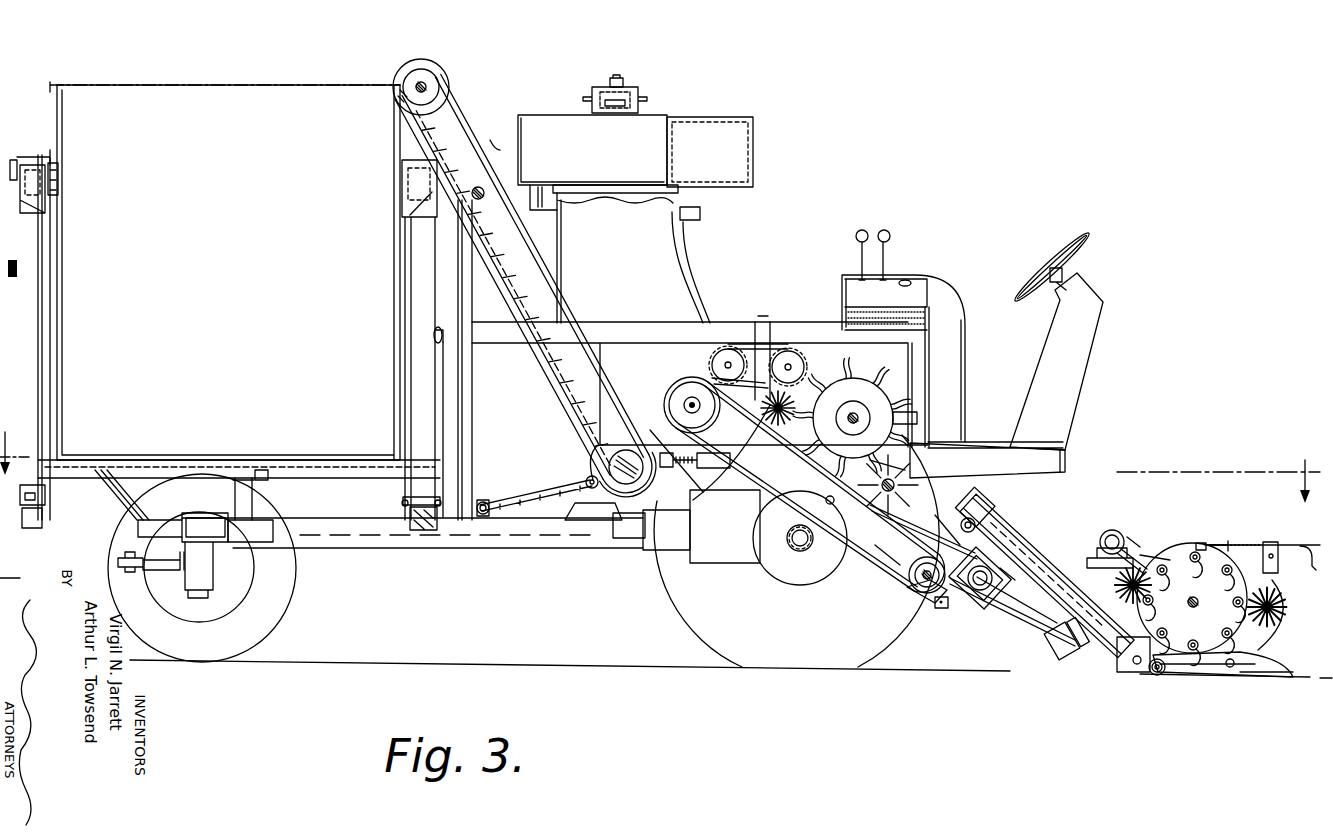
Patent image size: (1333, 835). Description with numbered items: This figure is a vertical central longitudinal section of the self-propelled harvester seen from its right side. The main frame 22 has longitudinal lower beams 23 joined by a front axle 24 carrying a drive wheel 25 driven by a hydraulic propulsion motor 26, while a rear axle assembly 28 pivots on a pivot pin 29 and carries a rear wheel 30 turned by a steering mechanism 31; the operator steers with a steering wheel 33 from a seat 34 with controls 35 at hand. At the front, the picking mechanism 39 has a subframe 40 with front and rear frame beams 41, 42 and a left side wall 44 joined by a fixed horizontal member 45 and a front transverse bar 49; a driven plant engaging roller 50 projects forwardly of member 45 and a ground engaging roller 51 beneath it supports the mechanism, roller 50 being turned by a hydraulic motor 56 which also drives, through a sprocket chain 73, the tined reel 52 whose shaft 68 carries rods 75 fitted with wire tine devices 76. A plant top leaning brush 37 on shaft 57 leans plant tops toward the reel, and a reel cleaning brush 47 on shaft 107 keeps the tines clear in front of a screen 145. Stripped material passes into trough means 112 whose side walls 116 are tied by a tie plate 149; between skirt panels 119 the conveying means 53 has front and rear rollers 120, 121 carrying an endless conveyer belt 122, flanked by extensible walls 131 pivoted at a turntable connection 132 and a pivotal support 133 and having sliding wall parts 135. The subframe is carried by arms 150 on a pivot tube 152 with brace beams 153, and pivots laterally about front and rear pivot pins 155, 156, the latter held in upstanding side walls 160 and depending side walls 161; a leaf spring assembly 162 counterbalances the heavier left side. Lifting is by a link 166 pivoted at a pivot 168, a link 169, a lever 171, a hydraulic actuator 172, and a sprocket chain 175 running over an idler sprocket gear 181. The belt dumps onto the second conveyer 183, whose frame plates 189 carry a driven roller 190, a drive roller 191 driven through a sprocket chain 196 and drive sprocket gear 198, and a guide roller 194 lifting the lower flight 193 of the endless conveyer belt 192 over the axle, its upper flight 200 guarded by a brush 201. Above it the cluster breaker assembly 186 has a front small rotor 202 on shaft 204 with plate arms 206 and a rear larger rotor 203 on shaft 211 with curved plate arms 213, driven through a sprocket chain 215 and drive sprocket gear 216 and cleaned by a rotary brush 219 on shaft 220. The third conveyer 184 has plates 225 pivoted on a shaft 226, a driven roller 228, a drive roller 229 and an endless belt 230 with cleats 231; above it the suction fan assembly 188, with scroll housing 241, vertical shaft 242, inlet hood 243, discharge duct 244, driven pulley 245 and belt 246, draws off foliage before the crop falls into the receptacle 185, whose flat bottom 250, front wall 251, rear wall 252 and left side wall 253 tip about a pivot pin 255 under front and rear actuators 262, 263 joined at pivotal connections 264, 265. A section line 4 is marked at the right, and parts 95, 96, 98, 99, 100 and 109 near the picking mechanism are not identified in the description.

The section line 4- 4 is at (660, 459).
The main frame 22 is at (516, 556).
The longitudinal lower beams 23 is at (562, 553).
The front axle 24 is at (798, 555).
The drive wheel 25 is at (706, 638).
The hydraulic propulsion motor 26 is at (650, 552).
The rear axle assembly 28 is at (222, 575).
The pivot pin 29 is at (175, 518).
The rear wheel 30 is at (252, 630).
The steering mechanism 31 is at (165, 572).
The steering wheel 33 is at (1087, 236).
The seat 34 is at (932, 292).
The controls 35 is at (878, 228).
The plant top leaning means 37 is at (1270, 630).
The picking mechanism 39 is at (1228, 540).
The subframe 40 is at (1015, 630).
The front frame beam 41 is at (1090, 652).
The rear frame beam 42 is at (985, 600).
The left front side wall 44 is at (1258, 650).
The fixed horizontal member 45 is at (1125, 655).
The reel cleaning means 47 is at (1148, 548).
The front transverse bar 49 is at (1285, 594).
The driven roller 50 is at (1156, 675).
The ground engaging roller 51 is at (1137, 668).
The tined reel 52 is at (1172, 540).
The conveying means 53 is at (995, 497).
The hydraulic motor 56 is at (1113, 530).
The brush shaft 57 is at (1285, 609).
The reel shaft 68 is at (1190, 612).
The endless sprocket chain 73 is at (1122, 540).
The rods or tubes 75 is at (1188, 580).
The tine devices 76 is at (1165, 585).
The tab 95 is at (1200, 542).
The rod end 96 is at (1225, 543).
The bracket 98 is at (1310, 546).
The threaded rod 99 is at (1248, 542).
The rod 100 is at (1266, 540).
The brush shaft 107 is at (1120, 585).
The skid tip 109 is at (1254, 676).
The trough means 112 is at (1060, 520).
The side wall 116 is at (1008, 488).
The skirt panels 119 is at (950, 520).
The front roller 120 is at (1106, 652).
The rear roller 121 is at (1010, 512).
The endless conveyer belt 122 is at (1050, 550).
The extensible and contractible wall 131 is at (1066, 568).
The pivotal connection 132 is at (1150, 612).
The pivotal support 133 is at (1000, 482).
The wall part 135 is at (1018, 530).
The screen 145 is at (1040, 535).
The top transverse tie plate 149 is at (908, 470).
The forwardly projecting arms 150 is at (940, 606).
The pivot tube 152 is at (1008, 584).
The inclined brace beams 153 is at (1030, 625).
The front pivot pin 155 is at (1078, 660).
The rear pivot pin 156 is at (1005, 588).
The upstanding side walls 160 is at (968, 600).
The depending side walls 161 is at (976, 622).
The counterbalancing leaf spring assembly 162 is at (1060, 658).
The link 166 is at (606, 503).
The pivot 168 is at (598, 510).
The link 169 is at (680, 460).
The lever 171 is at (592, 476).
The hydraulic actuator 172 is at (684, 500).
The sprocket chain 175 is at (543, 484).
The idler sprocket gear 181 is at (490, 509).
The second conveyer means 183 is at (895, 508).
The third conveyer means 184 is at (482, 115).
The receptacle 185 is at (294, 80).
The cluster breaker assembly 186 is at (930, 372).
The suction fan assembly 188 is at (668, 110).
The frame plates 189 is at (680, 386).
The driven roller 190 is at (915, 584).
The drive roller 191 is at (676, 405).
The endless conveyer belt 192 is at (880, 550).
The lower flight 193 is at (748, 474).
The guide roller 194 is at (828, 503).
The sprocket chain 196 is at (712, 368).
The drive sprocket gear 198 is at (744, 349).
The upper flight 200 is at (905, 585).
The brush 201 is at (900, 535).
The front small rotor 202 is at (930, 440).
The rear larger rotor 203 is at (920, 410).
The horizontal shaft 204 is at (900, 462).
The plate arms 206 is at (810, 528).
The horizontal shaft 211 is at (866, 410).
The plate arms 213 is at (852, 411).
The sprocket chain 215 is at (800, 354).
The drive sprocket gear 216 is at (778, 322).
The rotary brush 219 is at (808, 486).
The brush shaft 220 is at (770, 366).
The vertical plates 225 is at (427, 66).
The shaft 226 is at (485, 190).
The driven transverse roller 228 is at (597, 441).
The drive transverse roller 229 is at (398, 96).
The endless belt 230 is at (566, 283).
The cleats 231 is at (500, 140).
The scroll housing 241 is at (558, 116).
The vertical shaft 242 is at (618, 77).
The inlet hood 243 is at (700, 255).
The discharge duct 244 is at (755, 144).
The driven pulley 245 is at (610, 115).
The endless belt 246 is at (635, 90).
The flat bottom 250 is at (220, 460).
The front wall 251 is at (400, 285).
The rear wall 252 is at (42, 279).
The left side wall 253 is at (182, 185).
The pivot pin 255 is at (37, 157).
The front actuator 262 is at (415, 373).
The rear actuator 263 is at (40, 375).
The pivotal connection 264 is at (56, 181).
The pivotal connection 265 is at (40, 499).